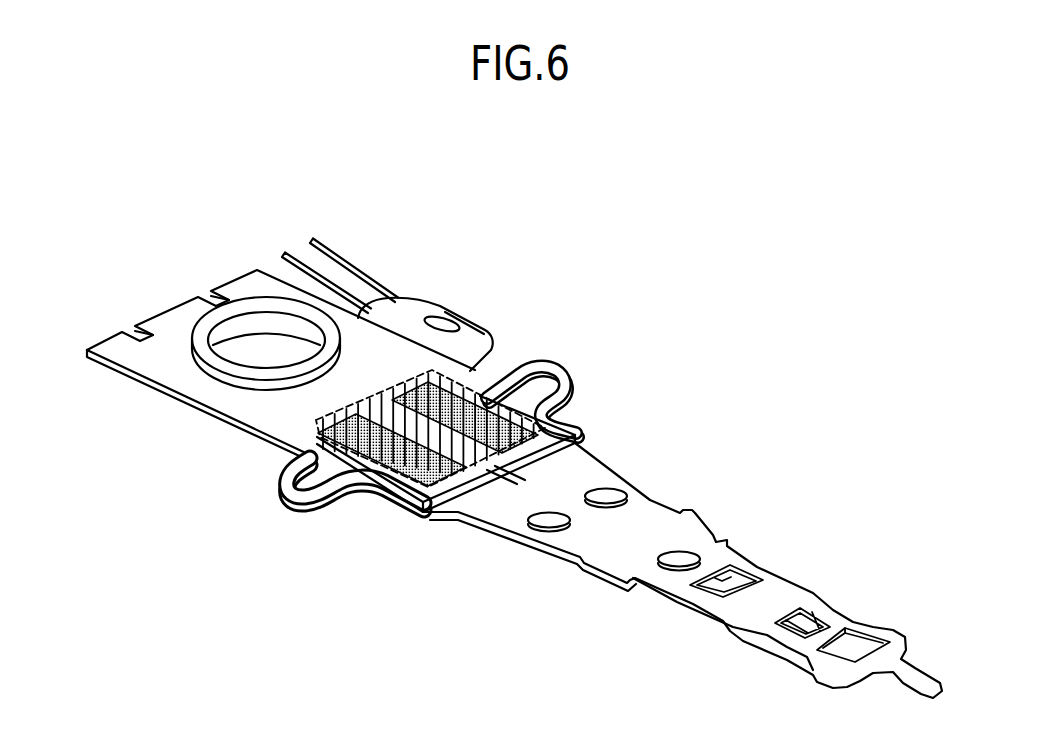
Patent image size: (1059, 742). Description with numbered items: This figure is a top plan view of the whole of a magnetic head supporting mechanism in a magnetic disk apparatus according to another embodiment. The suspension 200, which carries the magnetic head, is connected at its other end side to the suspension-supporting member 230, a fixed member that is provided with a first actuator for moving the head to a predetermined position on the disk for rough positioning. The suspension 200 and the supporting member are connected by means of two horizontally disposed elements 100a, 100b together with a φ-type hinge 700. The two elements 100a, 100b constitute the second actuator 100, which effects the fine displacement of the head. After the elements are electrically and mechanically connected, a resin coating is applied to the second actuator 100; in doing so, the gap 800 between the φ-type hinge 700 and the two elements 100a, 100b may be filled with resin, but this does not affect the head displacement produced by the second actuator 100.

The suspension-supporting member 230 is at (240, 287).
The gap 800 is at (386, 423).
The element 100b is at (470, 415).
The element 100a is at (412, 490).
The second actuator 100 is at (316, 420).
The φ-type hinge 700 is at (565, 380).
The suspension 200 is at (652, 510).